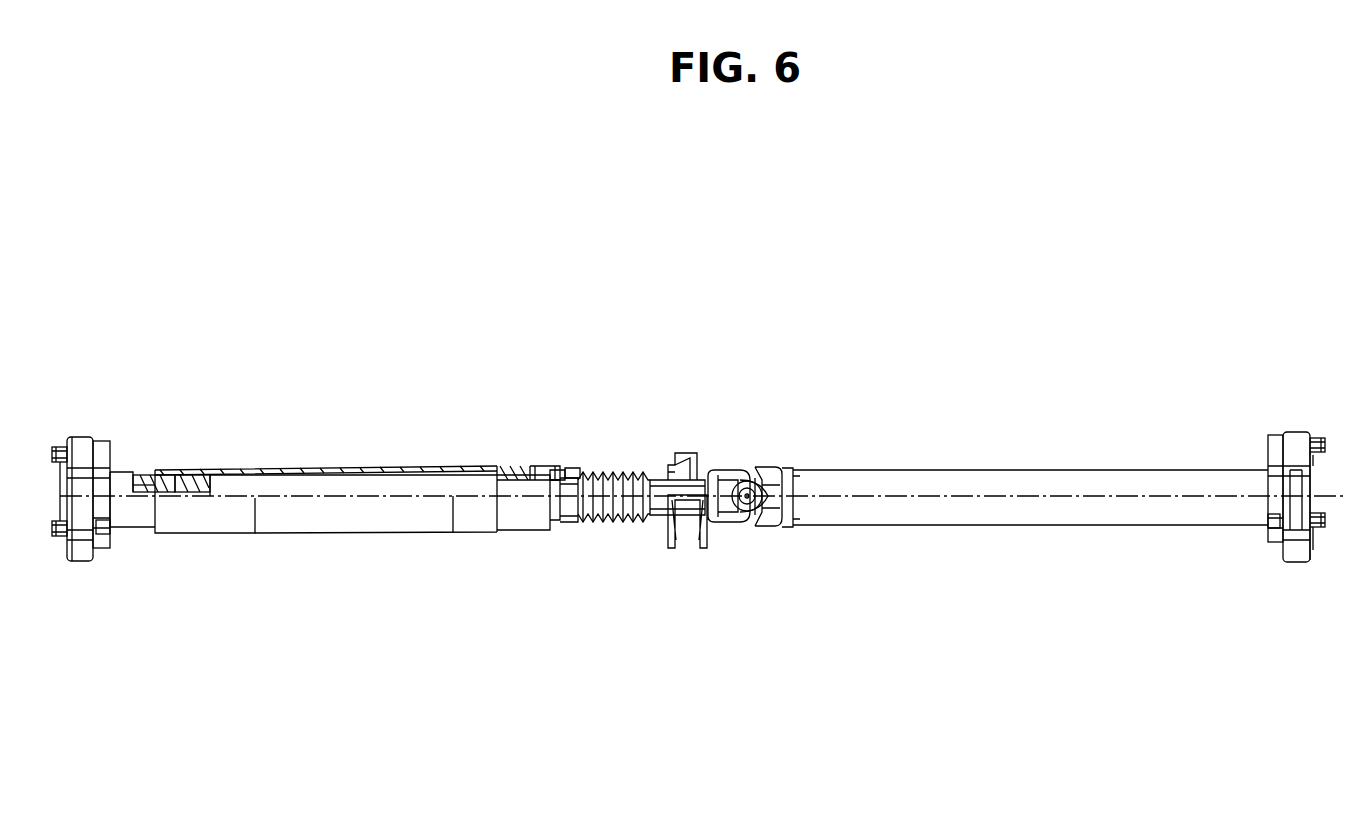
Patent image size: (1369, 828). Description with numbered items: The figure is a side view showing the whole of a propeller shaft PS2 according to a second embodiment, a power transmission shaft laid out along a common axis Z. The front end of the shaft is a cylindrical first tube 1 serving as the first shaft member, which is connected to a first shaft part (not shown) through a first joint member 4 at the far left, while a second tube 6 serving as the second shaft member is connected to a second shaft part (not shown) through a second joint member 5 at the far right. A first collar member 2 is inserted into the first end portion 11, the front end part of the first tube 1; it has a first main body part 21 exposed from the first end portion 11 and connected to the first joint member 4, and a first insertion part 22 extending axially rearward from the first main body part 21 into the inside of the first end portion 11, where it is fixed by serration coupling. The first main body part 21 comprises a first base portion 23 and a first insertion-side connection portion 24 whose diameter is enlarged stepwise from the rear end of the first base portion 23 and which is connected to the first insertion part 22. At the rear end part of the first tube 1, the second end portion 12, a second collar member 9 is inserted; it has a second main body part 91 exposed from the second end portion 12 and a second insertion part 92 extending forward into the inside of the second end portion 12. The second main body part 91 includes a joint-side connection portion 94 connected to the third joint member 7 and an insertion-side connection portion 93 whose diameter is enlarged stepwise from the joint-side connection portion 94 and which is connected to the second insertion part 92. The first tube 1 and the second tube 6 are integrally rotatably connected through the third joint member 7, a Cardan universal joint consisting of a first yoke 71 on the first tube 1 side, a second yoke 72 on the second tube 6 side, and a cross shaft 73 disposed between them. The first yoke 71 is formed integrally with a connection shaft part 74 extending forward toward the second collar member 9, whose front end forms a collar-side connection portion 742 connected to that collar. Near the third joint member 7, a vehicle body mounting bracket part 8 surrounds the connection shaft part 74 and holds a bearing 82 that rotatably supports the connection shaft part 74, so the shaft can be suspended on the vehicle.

The first tube 1 is at (352, 540).
The first collar member 2 is at (128, 545).
The first joint member 4 is at (78, 580).
The second joint member 5 is at (1297, 568).
The second tube 6 is at (1017, 532).
The third joint member 7 is at (765, 510).
The vehicle body mounting bracket part 8 is at (688, 556).
The second collar member 9 is at (547, 477).
The first end portion 11 is at (178, 536).
The second end portion 12 is at (520, 537).
The first main body part 21 is at (151, 403).
The first insertion part 22 is at (195, 467).
The first base portion 23 is at (133, 472).
The first insertion-side connection portion 24 is at (155, 472).
The first yoke 71 is at (728, 470).
The second yoke 72 is at (776, 470).
The cross shaft 73 is at (752, 470).
The connection shaft part 74 is at (655, 472).
The collar-side connection portion 742 is at (603, 470).
The bearing 82 is at (692, 456).
The second main body part 91 is at (547, 396).
The second insertion part 92 is at (535, 466).
The insertion-side connection portion 93 is at (553, 470).
The joint-side connection portion 94 is at (575, 468).
The propeller shaft PS2 is at (838, 458).
The axis Z is at (1325, 495).